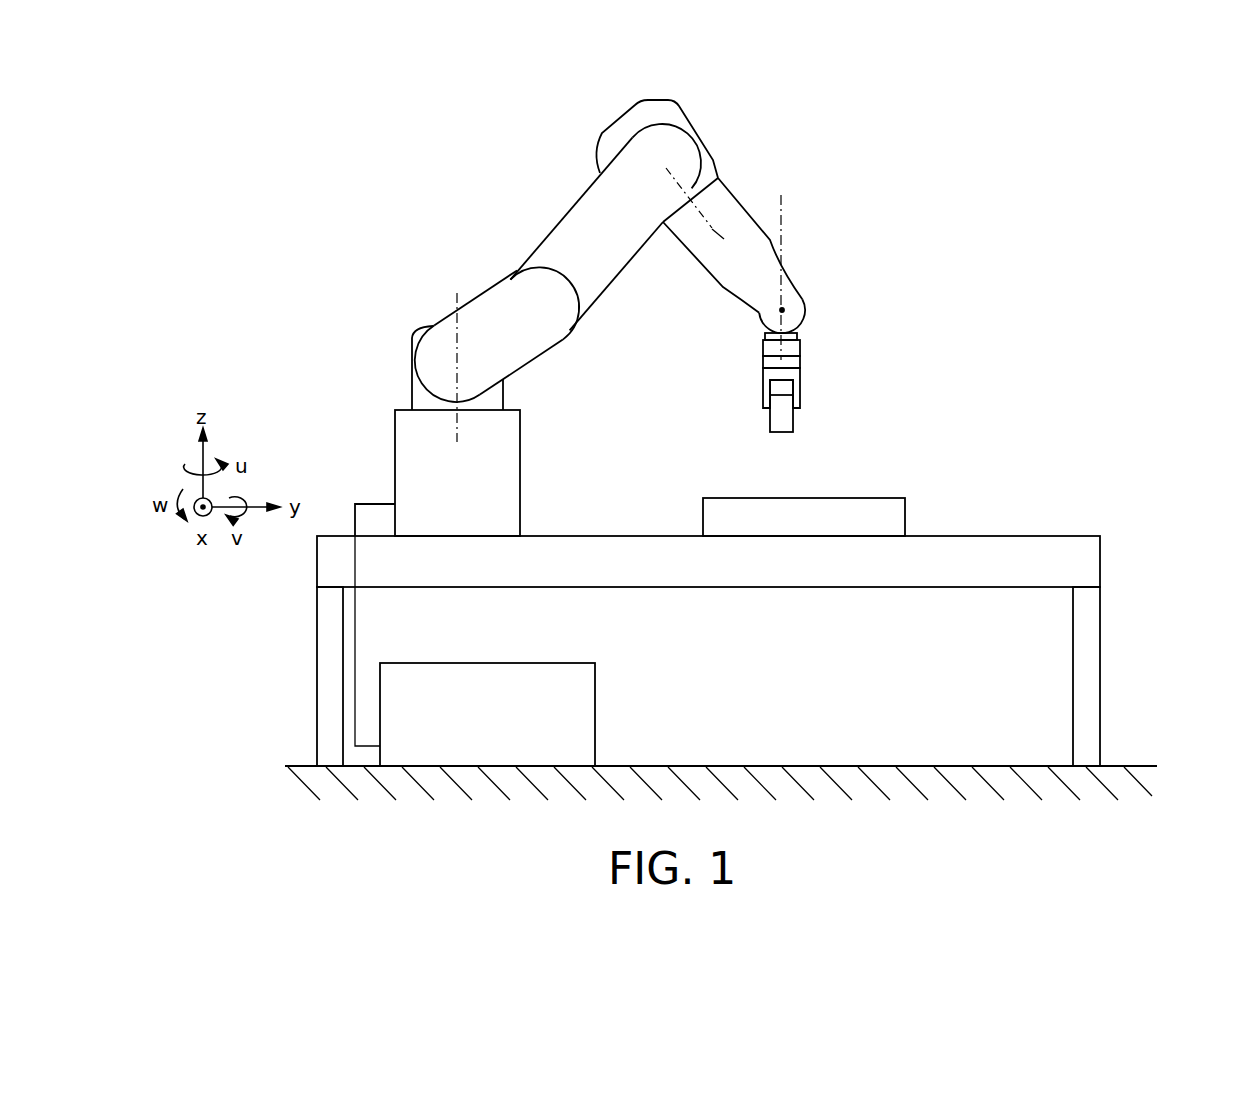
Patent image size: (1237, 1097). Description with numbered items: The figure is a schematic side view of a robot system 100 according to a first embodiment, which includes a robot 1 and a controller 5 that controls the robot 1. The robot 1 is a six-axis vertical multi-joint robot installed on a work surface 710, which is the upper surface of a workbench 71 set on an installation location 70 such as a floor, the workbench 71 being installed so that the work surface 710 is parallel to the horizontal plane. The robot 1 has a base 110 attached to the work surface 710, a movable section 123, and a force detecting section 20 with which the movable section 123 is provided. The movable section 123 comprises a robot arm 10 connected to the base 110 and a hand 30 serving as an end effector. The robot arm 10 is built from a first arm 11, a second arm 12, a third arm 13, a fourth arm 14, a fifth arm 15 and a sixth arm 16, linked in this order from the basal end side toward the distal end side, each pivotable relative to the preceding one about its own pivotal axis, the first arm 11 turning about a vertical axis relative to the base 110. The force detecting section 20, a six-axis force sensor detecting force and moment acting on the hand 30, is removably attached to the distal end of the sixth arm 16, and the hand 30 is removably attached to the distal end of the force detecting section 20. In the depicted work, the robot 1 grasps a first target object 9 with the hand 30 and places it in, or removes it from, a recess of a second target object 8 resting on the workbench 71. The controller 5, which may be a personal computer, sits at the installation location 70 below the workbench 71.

The robot system 100 is at (803, 103).
The robot 1 is at (768, 187).
The robot arm 10 is at (688, 110).
The base 110 is at (407, 427).
The first arm 11 is at (483, 310).
The second arm 12 is at (578, 222).
The third arm 13 is at (653, 110).
The fourth arm 14 is at (758, 258).
The fifth arm 15 is at (795, 333).
The sixth arm 16 is at (795, 350).
The movable section 123 is at (812, 260).
The force detecting section 20 is at (811, 359).
The hand 30 is at (811, 377).
The first target object 9 is at (783, 420).
The second target object 8 is at (870, 512).
The controller 5 is at (602, 689).
The installation location 70 is at (1120, 765).
The workbench 71 is at (1110, 556).
The work surface 710 is at (1037, 537).